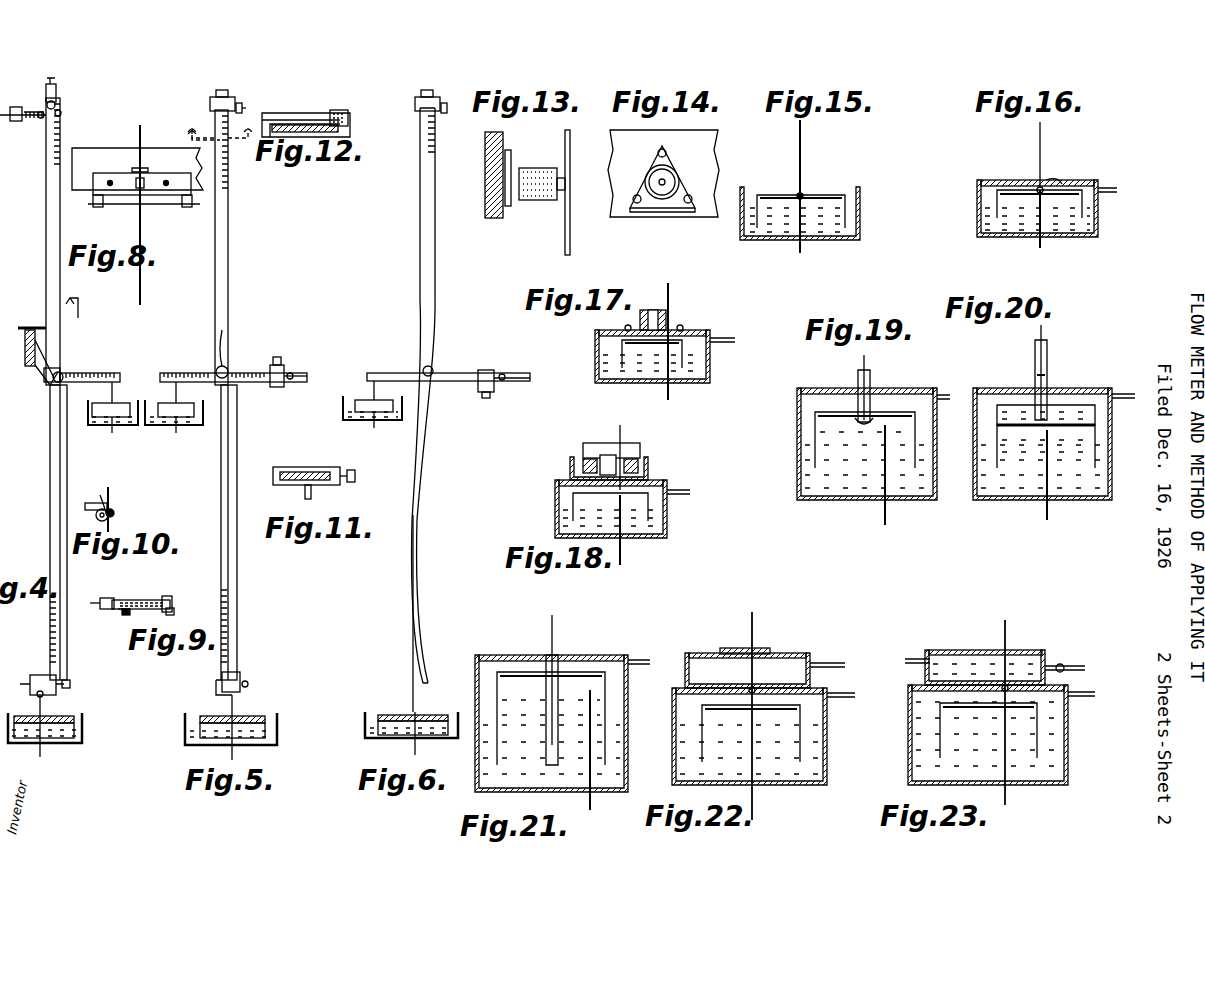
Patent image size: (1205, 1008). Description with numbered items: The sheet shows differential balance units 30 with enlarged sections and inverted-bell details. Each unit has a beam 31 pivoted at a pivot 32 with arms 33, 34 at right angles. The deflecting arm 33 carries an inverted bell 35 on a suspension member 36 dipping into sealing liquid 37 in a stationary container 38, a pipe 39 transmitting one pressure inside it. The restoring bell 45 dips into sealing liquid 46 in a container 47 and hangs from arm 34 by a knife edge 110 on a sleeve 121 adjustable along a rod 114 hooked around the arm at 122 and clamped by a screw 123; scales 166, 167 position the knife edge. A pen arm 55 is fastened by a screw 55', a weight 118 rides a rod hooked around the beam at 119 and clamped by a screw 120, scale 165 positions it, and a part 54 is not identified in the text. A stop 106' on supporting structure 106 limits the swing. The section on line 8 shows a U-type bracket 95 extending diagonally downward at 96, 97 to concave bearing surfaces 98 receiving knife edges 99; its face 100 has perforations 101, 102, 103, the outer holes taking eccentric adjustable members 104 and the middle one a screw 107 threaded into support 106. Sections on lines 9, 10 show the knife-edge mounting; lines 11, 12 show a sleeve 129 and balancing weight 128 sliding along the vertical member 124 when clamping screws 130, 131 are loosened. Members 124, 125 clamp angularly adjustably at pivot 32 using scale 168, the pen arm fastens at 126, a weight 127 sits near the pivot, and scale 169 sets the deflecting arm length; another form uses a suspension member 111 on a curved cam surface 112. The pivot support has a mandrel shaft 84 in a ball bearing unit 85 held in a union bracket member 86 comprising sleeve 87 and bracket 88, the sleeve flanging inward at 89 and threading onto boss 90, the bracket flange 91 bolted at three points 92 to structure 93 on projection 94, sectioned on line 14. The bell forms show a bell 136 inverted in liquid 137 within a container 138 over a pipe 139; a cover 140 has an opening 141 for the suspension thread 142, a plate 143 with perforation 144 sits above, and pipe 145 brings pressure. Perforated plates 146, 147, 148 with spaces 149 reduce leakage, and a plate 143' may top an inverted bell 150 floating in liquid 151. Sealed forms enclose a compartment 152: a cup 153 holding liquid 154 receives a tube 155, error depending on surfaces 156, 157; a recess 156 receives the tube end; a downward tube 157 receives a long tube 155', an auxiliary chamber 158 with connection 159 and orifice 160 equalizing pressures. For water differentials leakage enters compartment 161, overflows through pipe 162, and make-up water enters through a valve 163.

In FIG. 4, the section line 8 is at (82, 436).
In FIG. 4, the section line 9 is at (85, 655).
In FIG. 9, the section line 10 is at (104, 582).
In FIG. 5, the section line 11 is at (196, 660).
In FIG. 8, the section line 12 is at (204, 128).
In FIG. 5, the section line 12 is at (223, 125).
In FIG. 12, the section line 12 is at (250, 120).
In FIG. 13, the section line 14 is at (555, 145).
In FIG. 4, the differential balance unit 30 is at (46, 260).
In FIG. 5, the differential balance unit 30 is at (215, 285).
In FIG. 6, the differential balance unit 30 is at (420, 290).
In FIG. 4, the beam 31 is at (46, 200).
In FIG. 5, the beam 31 is at (228, 220).
In FIG. 6, the beam 31 is at (435, 265).
In FIG. 13, the beam 31 is at (570, 236).
In FIG. 4, the pivot 32 is at (62, 370).
In FIG. 5, the pivot 32 is at (232, 370).
In FIG. 4, the deflecting arm 33 is at (118, 374).
In FIG. 5, the deflecting arm 33 is at (212, 374).
In FIG. 6, the deflecting arm 33 is at (398, 373).
In FIG. 13, the deflecting arm 33 is at (570, 192).
In FIG. 4, the restoring arm 34 is at (50, 525).
In FIG. 10, the restoring arm 34 is at (110, 506).
In FIG. 9, the restoring arm 34 is at (170, 598).
In FIG. 5, the restoring arm 34 is at (221, 540).
In FIG. 6, the restoring arm 34 is at (422, 465).
In FIG. 4, the deflecting bell 35 is at (116, 404).
In FIG. 5, the deflecting bell 35 is at (180, 404).
In FIG. 6, the deflecting bell 35 is at (358, 400).
In FIG. 4, the suspension member 36 is at (110, 372).
In FIG. 5, the suspension member 36 is at (176, 373).
In FIG. 6, the suspension member 36 is at (368, 373).
In FIG. 4, the sealing liquid 37 is at (104, 425).
In FIG. 6, the sealing liquid 37 is at (343, 420).
In FIG. 4, the stationary container 38 is at (92, 408).
In FIG. 5, the stationary container 38 is at (148, 425).
In FIG. 6, the stationary container 38 is at (343, 404).
In FIG. 4, the pipe 39 is at (113, 433).
In FIG. 5, the pipe 39 is at (178, 433).
In FIG. 6, the pipe 39 is at (374, 428).
In FIG. 4, the restoring bell 45 is at (78, 714).
In FIG. 5, the restoring bell 45 is at (270, 715).
In FIG. 6, the restoring bell 45 is at (378, 716).
In FIG. 4, the sealing liquid 46 is at (84, 730).
In FIG. 5, the sealing liquid 46 is at (185, 730).
In FIG. 6, the sealing liquid 46 is at (365, 727).
In FIG. 4, the container 47 is at (82, 740).
In FIG. 5, the container 47 is at (277, 732).
In FIG. 6, the container 47 is at (378, 738).
In FIG. 4, the pipe 54 is at (36, 128).
In FIG. 4, the pen arm 55 is at (39, 90).
In FIG. 5, the pen arm 55 is at (310, 360).
In FIG. 4, the screw 55' is at (41, 101).
In FIG. 13, the lateral mandrel shaft 84 is at (565, 182).
In FIG. 13, the ball bearing unit 85 is at (538, 200).
In FIG. 14, the union bracket member 86 is at (676, 176).
In FIG. 13, the sleeve 87 is at (548, 168).
In FIG. 14, the sleeve 87 is at (670, 165).
In FIG. 13, the cooperating bracket member 88 is at (514, 152).
In FIG. 14, the cooperating bracket member 88 is at (658, 162).
In FIG. 13, the inward flange 89 is at (557, 170).
In FIG. 13, the threaded boss 90 is at (520, 185).
In FIG. 13, the flange 91 is at (520, 195).
In FIG. 14, the flange 91 is at (660, 180).
In FIG. 14, the bolting points 92 is at (666, 152).
In FIG. 13, the stationary supporting structure 93 is at (485, 178).
In FIG. 14, the stationary supporting structure 93 is at (712, 152).
In FIG. 13, the intermediate projection 94 is at (505, 178).
In FIG. 4, the bracket 95 is at (42, 368).
In FIG. 8, the bracket 95 is at (110, 178).
In FIG. 8, the diagonal extension 96 is at (186, 207).
In FIG. 8, the diagonal extension 97 is at (94, 207).
In FIG. 4, the concave bearing surfaces 98 is at (46, 382).
In FIG. 4, the knife edges 99 is at (60, 350).
In FIG. 8, the bracket face 100 is at (180, 156).
In FIG. 8, the perforation 101 is at (96, 180).
In FIG. 8, the perforation 102 is at (128, 186).
In FIG. 8, the perforation 103 is at (158, 185).
In FIG. 8, the eccentric adjustable members 104 is at (120, 169).
In FIG. 4, the stationary supporting structure 106 is at (17, 348).
In FIG. 8, the stationary supporting structure 106 is at (167, 155).
In FIG. 4, the stop 106' is at (23, 319).
In FIG. 8, the clamping screw 107 is at (136, 195).
In FIG. 4, the knife edge 110 is at (44, 675).
In FIG. 10, the knife edge 110 is at (88, 505).
In FIG. 9, the knife edge 110 is at (113, 593).
In FIG. 5, the knife edge 110 is at (232, 672).
In FIG. 11, the knife edge 110 is at (305, 498).
In FIG. 6, the flexible suspension member 111 is at (413, 663).
In FIG. 6, the cam surface 112 is at (412, 525).
In FIG. 10, the rod 114 is at (110, 495).
In FIG. 9, the rod 114 is at (140, 600).
In FIG. 4, the weight 118 is at (14, 107).
In FIG. 4, the hook 119 is at (61, 114).
In FIG. 4, the screw 120 is at (43, 118).
In FIG. 4, the sleeve 121 is at (44, 696).
In FIG. 10, the sleeve 121 is at (96, 519).
In FIG. 9, the sleeve 121 is at (118, 609).
In FIG. 4, the hook 122 is at (70, 684).
In FIG. 9, the hook 122 is at (174, 612).
In FIG. 4, the screw 123 is at (64, 692).
In FIG. 10, the screw 123 is at (116, 514).
In FIG. 9, the screw 123 is at (122, 614).
In FIG. 5, the vertical flat member 124 is at (228, 290).
In FIG. 5, the horizontal flat member 125 is at (242, 382).
In FIG. 5, the pen arm fastening 126 is at (292, 372).
In FIG. 5, the lateral balancing weight 127 is at (276, 365).
In FIG. 6, the lateral balancing weight 127 is at (486, 370).
In FIG. 5, the balancing weight 128 is at (210, 106).
In FIG. 6, the balancing weight 128 is at (415, 106).
In FIG. 11, the sleeve 129 is at (300, 467).
In FIG. 5, the clamping screw 130 is at (250, 688).
In FIG. 11, the clamping screw 130 is at (355, 476).
In FIG. 5, the clamping screw 131 is at (238, 103).
In FIG. 12, the clamping screw 131 is at (338, 110).
In FIG. 15, the bell 136 is at (846, 197).
In FIG. 16, the bell 136 is at (1037, 219).
In FIG. 19, the bell 136 is at (815, 432).
In FIG. 20, the bell 136 is at (997, 438).
In FIG. 21, the bell 136 is at (497, 691).
In FIG. 22, the bell 136 is at (751, 733).
In FIG. 23, the bell 136 is at (988, 730).
In FIG. 15, the liquid 137 is at (848, 215).
In FIG. 16, the liquid 137 is at (1039, 204).
In FIG. 17, the liquid 137 is at (652, 354).
In FIG. 15, the container 138 is at (860, 236).
In FIG. 16, the container 138 is at (986, 237).
In FIG. 15, the pipe 139 is at (804, 250).
In FIG. 16, the pipe 139 is at (1044, 243).
In FIG. 17, the pipe 139 is at (666, 396).
In FIG. 16, the cover 140 is at (986, 182).
In FIG. 17, the cover 140 is at (700, 332).
In FIG. 20, the cover 140 is at (1100, 388).
In FIG. 23, the cover 140 is at (912, 694).
In FIG. 16, the opening 141 is at (1064, 180).
In FIG. 16, the suspension thread 142 is at (1042, 140).
In FIG. 18, the suspension thread 142 is at (618, 437).
In FIG. 22, the suspension thread 142 is at (754, 625).
In FIG. 16, the second plate 143 is at (1003, 166).
In FIG. 20, the second plate 143 is at (1083, 374).
In FIG. 18, the orifice plate 143' is at (628, 451).
In FIG. 16, the perforation 144 is at (1042, 186).
In FIG. 22, the perforation 144 is at (754, 686).
In FIG. 23, the perforation 144 is at (1005, 686).
In FIG. 16, the pipe 145 is at (1100, 190).
In FIG. 17, the pipe 145 is at (725, 342).
In FIG. 22, the pipe 145 is at (848, 698).
In FIG. 23, the pipe 145 is at (1078, 697).
In FIG. 17, the perforated plate 146 is at (668, 326).
In FIG. 17, the perforated plate 147 is at (664, 312).
In FIG. 17, the perforated plate 148 is at (640, 315).
In FIG. 17, the intermediate spaces 149 is at (625, 328).
In FIG. 18, the inverted bell 150 is at (576, 458).
In FIG. 18, the liquid 151 is at (650, 473).
In FIG. 19, the compartment 152 is at (820, 398).
In FIG. 20, the compartment 152 is at (990, 395).
In FIG. 21, the compartment 152 is at (490, 672).
In FIG. 22, the compartment 152 is at (690, 700).
In FIG. 23, the compartment 152 is at (920, 705).
In FIG. 20, the cup 153 is at (997, 424).
In FIG. 20, the liquid 154 is at (997, 409).
In FIG. 19, the tube 155 is at (885, 388).
In FIG. 20, the tube 155 is at (1065, 372).
In FIG. 21, the tube 155' is at (584, 690).
In FIG. 19, the cup surface 156 is at (858, 424).
In FIG. 20, the cup surface 156 is at (1005, 408).
In FIG. 20, the tube surface 157 is at (1035, 372).
In FIG. 21, the tube surface 157 is at (546, 706).
In FIG. 22, the auxiliary chamber 158 is at (747, 670).
In FIG. 22, the pressure connection 159 is at (835, 670).
In FIG. 22, the orifice 160 is at (758, 650).
In FIG. 23, the compartment 161 is at (928, 680).
In FIG. 23, the waste pipe 162 is at (905, 662).
In FIG. 23, the valve 163 is at (1060, 664).
In FIG. 4, the scale 165 is at (60, 130).
In FIG. 5, the scale 165 is at (228, 140).
In FIG. 6, the scale 165 is at (435, 127).
In FIG. 4, the scale 166 is at (50, 607).
In FIG. 5, the scale 166 is at (237, 608).
In FIG. 9, the scale 167 is at (138, 598).
In FIG. 5, the scale 168 is at (226, 345).
In FIG. 4, the scale 169 is at (64, 372).